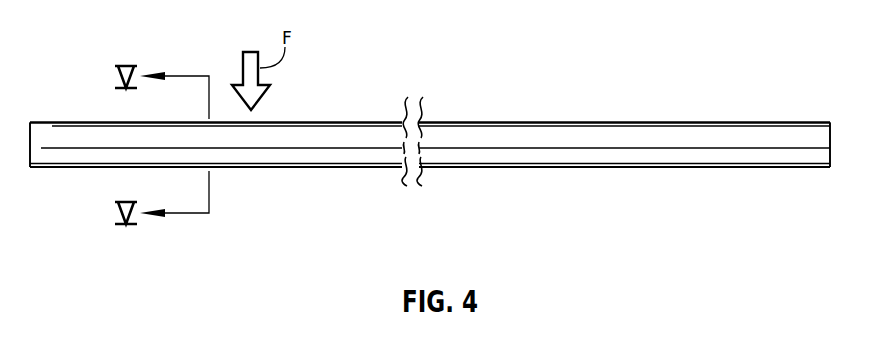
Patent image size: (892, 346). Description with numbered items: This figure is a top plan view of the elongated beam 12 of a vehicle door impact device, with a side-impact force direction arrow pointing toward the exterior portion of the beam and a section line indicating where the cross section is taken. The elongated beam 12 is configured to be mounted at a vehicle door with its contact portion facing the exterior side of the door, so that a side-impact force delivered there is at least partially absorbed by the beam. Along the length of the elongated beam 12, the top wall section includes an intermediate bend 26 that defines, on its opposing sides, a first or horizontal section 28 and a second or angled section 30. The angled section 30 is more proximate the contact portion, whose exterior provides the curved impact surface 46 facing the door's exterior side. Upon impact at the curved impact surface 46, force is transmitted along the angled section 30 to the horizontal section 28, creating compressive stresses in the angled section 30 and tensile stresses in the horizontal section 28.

The elongated beam 12 is at (670, 56).
The intermediate bend 26 is at (779, 135).
The first section 28 is at (556, 155).
The second section 30 is at (615, 143).
The curved impact surface 46 is at (527, 122).